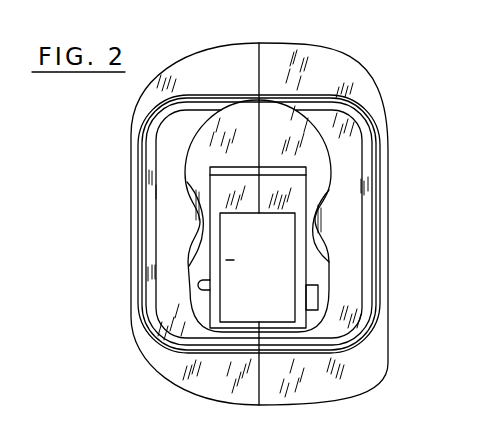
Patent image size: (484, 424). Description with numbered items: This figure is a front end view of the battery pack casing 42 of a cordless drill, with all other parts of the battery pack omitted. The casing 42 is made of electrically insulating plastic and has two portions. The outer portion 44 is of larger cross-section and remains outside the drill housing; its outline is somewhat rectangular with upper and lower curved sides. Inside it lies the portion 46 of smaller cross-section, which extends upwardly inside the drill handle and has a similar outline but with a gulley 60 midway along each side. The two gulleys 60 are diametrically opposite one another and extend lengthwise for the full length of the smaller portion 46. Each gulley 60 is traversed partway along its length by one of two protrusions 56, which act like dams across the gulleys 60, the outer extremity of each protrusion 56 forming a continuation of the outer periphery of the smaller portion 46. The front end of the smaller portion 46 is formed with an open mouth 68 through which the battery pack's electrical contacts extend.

The casing 42 is at (362, 62).
The portion of larger cross-section 44 is at (130, 128).
The portion of smaller cross-section 46 is at (331, 157).
The protrusion 56 is at (193, 207).
The gulley 60 is at (187, 238).
The open mouth 68 is at (222, 260).